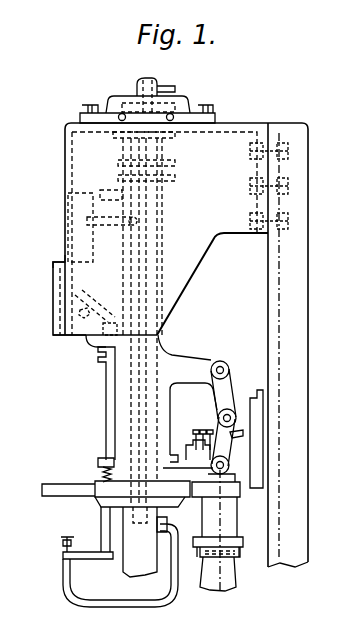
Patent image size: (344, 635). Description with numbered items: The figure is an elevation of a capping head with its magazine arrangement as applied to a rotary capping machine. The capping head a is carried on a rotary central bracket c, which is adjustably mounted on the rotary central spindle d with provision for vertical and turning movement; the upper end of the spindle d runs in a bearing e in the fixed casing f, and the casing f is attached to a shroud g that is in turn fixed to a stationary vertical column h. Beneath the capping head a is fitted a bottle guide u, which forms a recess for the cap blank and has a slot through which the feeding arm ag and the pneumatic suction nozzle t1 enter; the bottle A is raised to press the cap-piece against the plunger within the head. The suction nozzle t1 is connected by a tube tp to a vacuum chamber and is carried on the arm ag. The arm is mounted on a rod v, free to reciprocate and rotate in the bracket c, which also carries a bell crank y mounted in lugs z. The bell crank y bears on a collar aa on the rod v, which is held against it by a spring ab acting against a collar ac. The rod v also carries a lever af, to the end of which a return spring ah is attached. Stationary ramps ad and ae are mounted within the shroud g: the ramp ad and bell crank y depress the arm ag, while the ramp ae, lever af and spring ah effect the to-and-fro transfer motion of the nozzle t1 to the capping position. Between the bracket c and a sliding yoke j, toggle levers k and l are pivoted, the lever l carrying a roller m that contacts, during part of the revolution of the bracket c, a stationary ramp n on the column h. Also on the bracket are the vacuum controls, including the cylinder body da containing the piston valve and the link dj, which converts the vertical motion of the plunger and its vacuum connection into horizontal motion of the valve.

The shroud g is at (220, 130).
The stationary vertical column h is at (279, 345).
The fixed casing f is at (173, 101).
The bearing e is at (119, 122).
The stationary ramp ae is at (95, 226).
The return spring ah is at (105, 236).
The lever af is at (60, 266).
The bell crank y is at (95, 297).
The collar aa is at (98, 314).
The stationary ramp ad is at (66, 337).
The lugs z is at (94, 343).
The rod v is at (105, 416).
The collar ac is at (103, 460).
The spring ab is at (102, 474).
The feeding arm ag is at (83, 552).
The pneumatic suction nozzle t1 is at (67, 537).
The tube tp is at (76, 594).
The rotary central spindle d is at (140, 542).
The rotary central bracket c is at (163, 441).
The cylinder body da is at (188, 460).
The link dj is at (196, 431).
The toggle lever k is at (220, 396).
The toggle lever l is at (221, 443).
The sliding yoke j is at (224, 469).
The stationary ramp n is at (250, 398).
The roller m is at (243, 433).
The capping head a is at (217, 531).
The bottle guide u is at (238, 547).
The bottle A is at (218, 574).